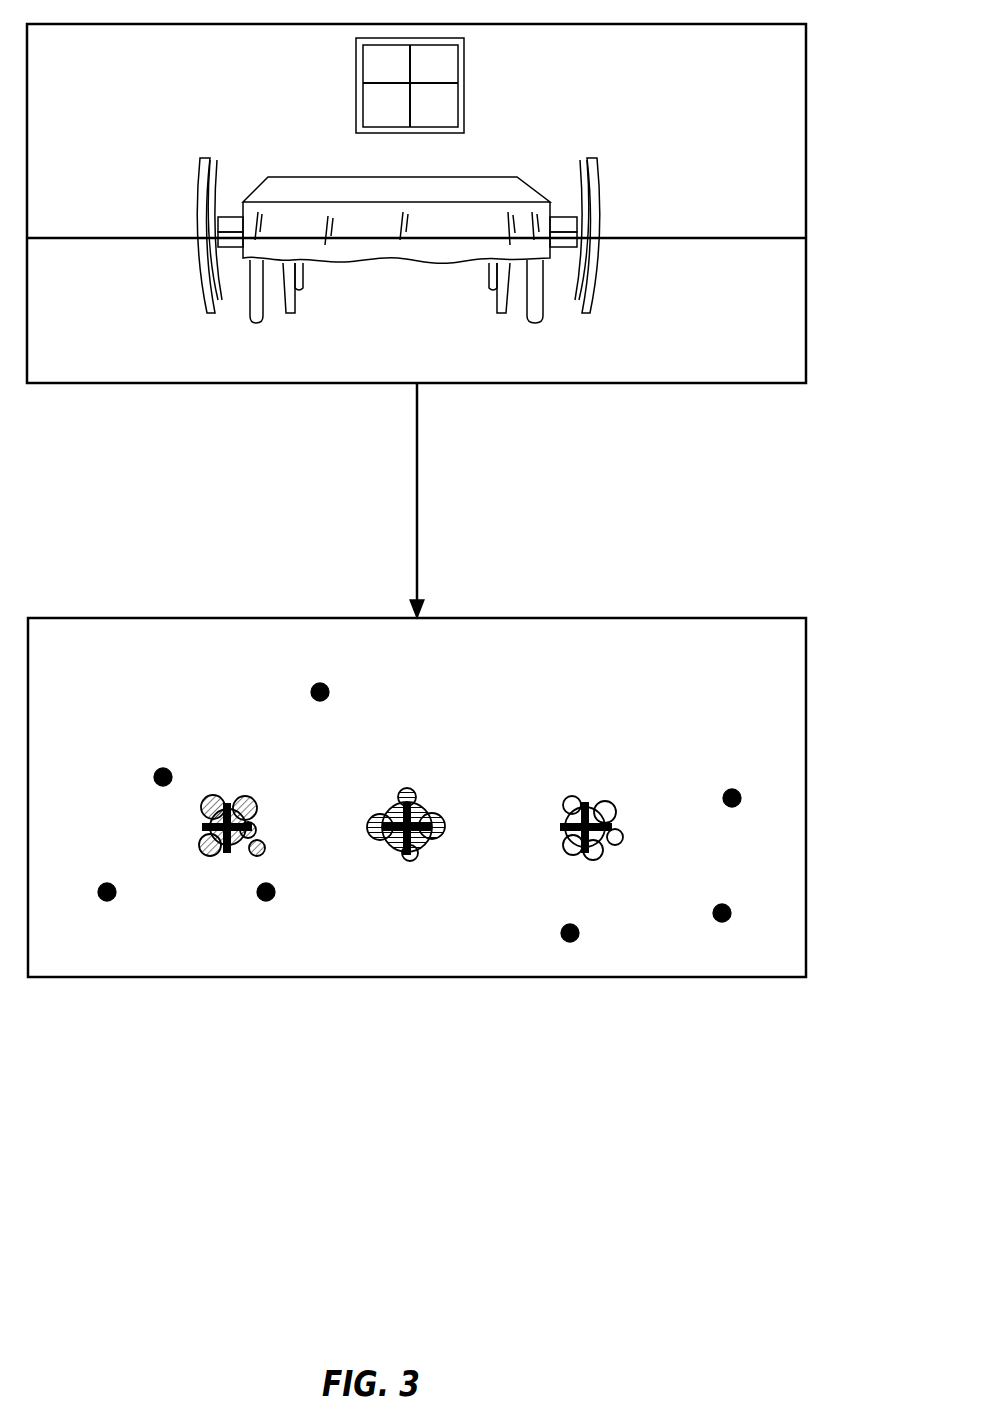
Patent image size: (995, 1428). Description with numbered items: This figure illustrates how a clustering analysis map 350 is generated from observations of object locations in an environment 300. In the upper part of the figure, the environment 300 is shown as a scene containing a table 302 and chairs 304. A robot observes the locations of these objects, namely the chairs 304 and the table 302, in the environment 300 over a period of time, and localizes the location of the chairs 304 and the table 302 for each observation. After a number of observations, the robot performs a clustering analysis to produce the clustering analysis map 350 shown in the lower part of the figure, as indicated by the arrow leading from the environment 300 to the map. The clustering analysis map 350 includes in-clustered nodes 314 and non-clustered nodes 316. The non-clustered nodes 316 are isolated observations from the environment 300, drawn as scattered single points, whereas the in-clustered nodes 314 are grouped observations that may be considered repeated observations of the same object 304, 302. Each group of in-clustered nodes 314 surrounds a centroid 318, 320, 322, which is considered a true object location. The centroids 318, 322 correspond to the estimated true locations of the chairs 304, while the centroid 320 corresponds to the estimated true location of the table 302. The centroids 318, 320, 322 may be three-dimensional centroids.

The environment 300 is at (806, 300).
The table 302 is at (396, 247).
The chair 304 is at (598, 166).
The clustering analysis map 350 is at (806, 768).
The in-clustered node 314 is at (418, 852).
The non-clustered node 316 is at (275, 886).
The centroid 318 is at (233, 800).
The centroid 320 is at (418, 817).
The centroid 322 is at (590, 800).